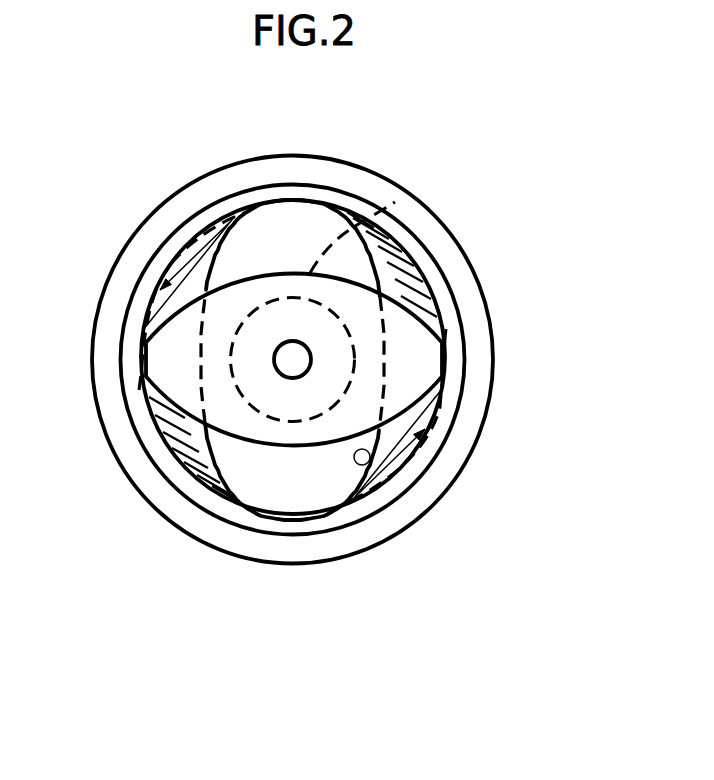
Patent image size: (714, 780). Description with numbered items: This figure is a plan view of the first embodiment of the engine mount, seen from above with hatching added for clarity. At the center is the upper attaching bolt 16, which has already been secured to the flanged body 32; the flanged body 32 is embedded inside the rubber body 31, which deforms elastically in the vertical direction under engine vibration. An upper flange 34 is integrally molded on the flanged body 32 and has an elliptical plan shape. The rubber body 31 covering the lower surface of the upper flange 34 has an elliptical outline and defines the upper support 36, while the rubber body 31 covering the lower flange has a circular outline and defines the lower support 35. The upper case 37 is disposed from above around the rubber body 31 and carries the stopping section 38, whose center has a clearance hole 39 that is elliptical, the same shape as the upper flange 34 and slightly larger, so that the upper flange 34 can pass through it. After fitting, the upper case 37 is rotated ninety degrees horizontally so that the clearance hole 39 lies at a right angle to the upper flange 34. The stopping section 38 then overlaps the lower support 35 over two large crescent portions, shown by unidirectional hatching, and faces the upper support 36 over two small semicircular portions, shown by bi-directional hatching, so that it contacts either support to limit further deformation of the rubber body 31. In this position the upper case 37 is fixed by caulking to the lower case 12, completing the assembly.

The lower case 12 is at (420, 502).
The upper attaching bolt 16 is at (296, 368).
The rubber body 31 is at (172, 256).
The flanged body 32 is at (392, 205).
The upper flange 34 is at (447, 352).
The lower support 35 is at (231, 226).
The upper support 36 is at (413, 336).
The upper case 37 is at (423, 238).
The stopping section 38 is at (431, 275).
The clearance hole 39 is at (369, 452).